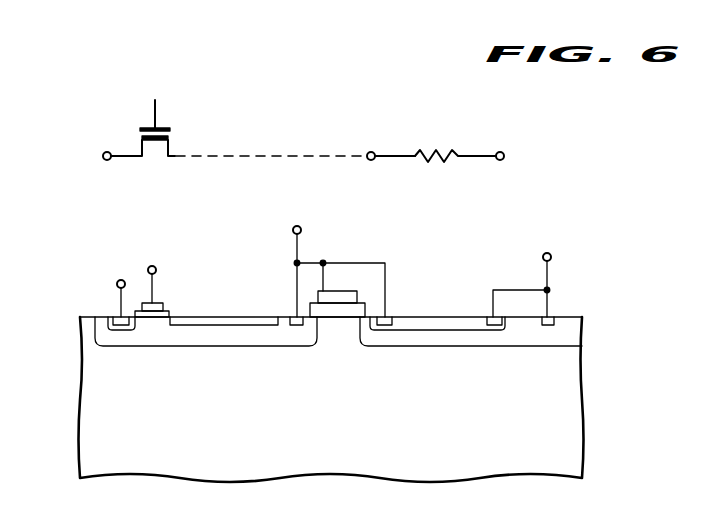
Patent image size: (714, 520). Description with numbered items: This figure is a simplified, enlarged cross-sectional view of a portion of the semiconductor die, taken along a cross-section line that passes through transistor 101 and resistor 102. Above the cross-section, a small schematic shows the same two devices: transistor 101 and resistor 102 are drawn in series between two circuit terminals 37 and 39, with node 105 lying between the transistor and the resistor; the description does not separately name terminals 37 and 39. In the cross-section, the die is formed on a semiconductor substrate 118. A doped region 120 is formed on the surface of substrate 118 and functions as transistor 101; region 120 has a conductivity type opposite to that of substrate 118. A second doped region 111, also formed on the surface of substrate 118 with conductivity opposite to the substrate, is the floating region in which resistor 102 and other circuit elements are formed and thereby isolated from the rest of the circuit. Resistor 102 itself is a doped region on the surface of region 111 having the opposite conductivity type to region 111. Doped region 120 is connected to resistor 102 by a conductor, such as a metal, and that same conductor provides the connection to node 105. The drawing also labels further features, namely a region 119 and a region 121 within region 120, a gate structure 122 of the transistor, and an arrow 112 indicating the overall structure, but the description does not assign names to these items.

The first terminal 37 is at (107, 150).
The second terminal 39 is at (500, 150).
The transistor 101 is at (176, 125).
The resistor 102 is at (436, 166).
The node 105 is at (371, 150).
The doped region 111 is at (440, 346).
The semiconductor device 112 is at (180, 386).
The semiconductor substrate 118 is at (355, 441).
The contact region 119 is at (118, 331).
The doped region 120 is at (248, 346).
The diffusion region 121 is at (202, 318).
The gate electrode 122 is at (312, 310).